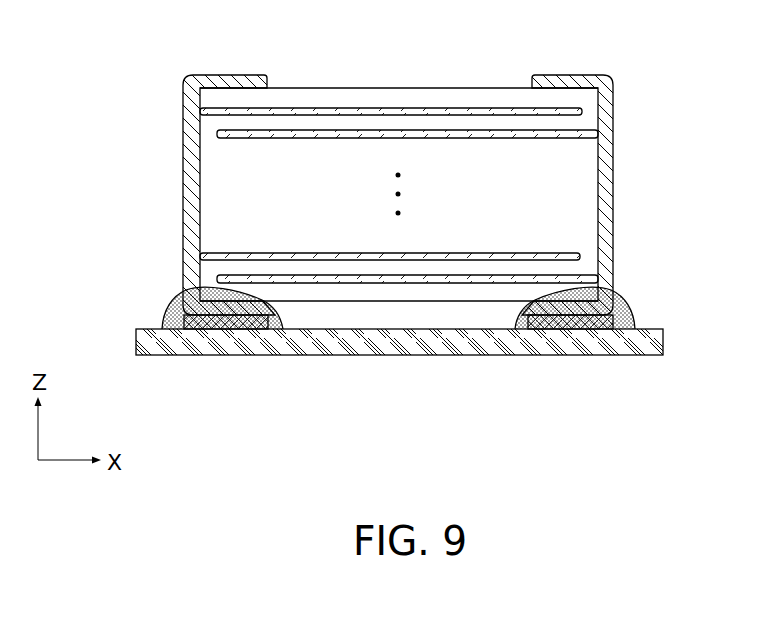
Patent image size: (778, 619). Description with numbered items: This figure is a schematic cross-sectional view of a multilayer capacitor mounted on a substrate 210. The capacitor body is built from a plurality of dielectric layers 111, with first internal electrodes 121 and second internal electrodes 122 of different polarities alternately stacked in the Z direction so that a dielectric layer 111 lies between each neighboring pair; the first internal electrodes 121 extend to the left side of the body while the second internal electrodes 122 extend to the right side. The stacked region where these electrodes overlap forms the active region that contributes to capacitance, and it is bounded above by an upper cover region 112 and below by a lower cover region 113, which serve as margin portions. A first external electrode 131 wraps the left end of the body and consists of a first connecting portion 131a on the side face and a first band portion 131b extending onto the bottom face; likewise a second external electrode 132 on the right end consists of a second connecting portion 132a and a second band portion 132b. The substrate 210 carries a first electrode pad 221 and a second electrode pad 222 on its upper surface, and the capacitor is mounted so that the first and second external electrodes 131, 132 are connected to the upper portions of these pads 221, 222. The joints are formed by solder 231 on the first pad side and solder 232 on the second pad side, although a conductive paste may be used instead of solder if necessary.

The dielectric layer 111 is at (463, 270).
The upper cover region 112 is at (405, 95).
The lower cover region 113 is at (403, 294).
The first internal electrode 121 is at (223, 110).
The second internal electrode 122 is at (513, 284).
The first external electrode 131 is at (152, 195).
The first connecting portion 131a is at (185, 213).
The first band portion 131b is at (190, 298).
The second external electrode 132 is at (642, 195).
The second connecting portion 132a is at (613, 213).
The second band portion 132b is at (585, 300).
The substrate 210 is at (320, 340).
The first electrode pad 221 is at (229, 329).
The second electrode pad 222 is at (578, 306).
The solder 231 is at (170, 329).
The solder 232 is at (627, 292).